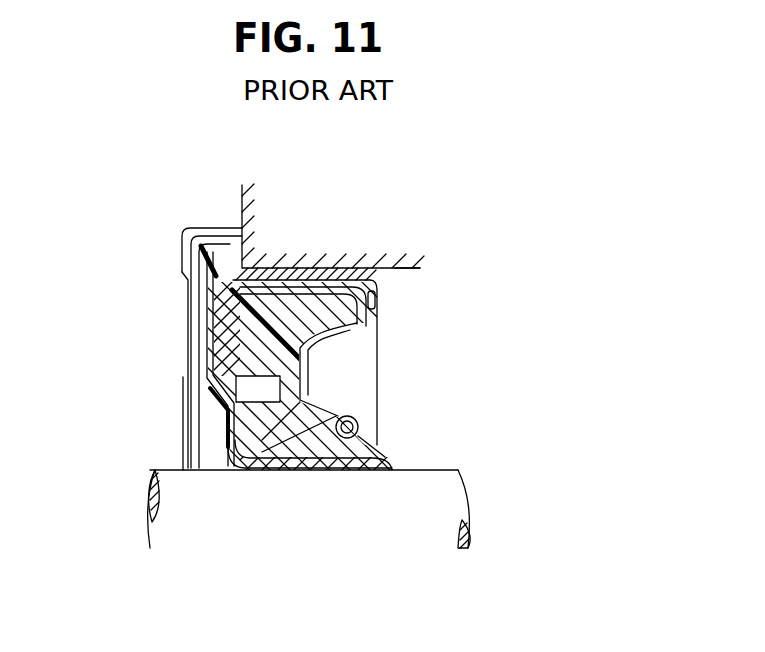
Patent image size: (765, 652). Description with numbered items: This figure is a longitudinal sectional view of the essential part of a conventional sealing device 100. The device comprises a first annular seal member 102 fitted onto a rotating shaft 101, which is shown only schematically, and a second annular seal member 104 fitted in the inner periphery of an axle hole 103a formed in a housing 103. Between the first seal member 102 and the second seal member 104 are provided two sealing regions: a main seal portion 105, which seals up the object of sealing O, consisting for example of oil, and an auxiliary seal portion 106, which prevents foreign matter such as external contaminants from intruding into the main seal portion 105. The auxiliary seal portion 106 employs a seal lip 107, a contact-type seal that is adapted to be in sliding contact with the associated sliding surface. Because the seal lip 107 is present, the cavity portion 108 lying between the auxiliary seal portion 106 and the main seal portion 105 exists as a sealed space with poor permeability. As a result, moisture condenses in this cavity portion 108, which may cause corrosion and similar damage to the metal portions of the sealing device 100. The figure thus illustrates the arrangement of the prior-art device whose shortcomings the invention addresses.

The sealing device 100 is at (370, 281).
The rotating shaft 101 is at (415, 480).
The first annular seal member 102 is at (398, 305).
The housing 103 is at (243, 181).
The axle hole 103a is at (407, 272).
The second annular seal member 104 is at (215, 432).
The main seal portion 105 is at (330, 470).
The auxiliary seal portion 106 is at (183, 272).
The seal lip 107 is at (195, 274).
The cavity portion 108 is at (278, 399).
The object of sealing O is at (557, 396).